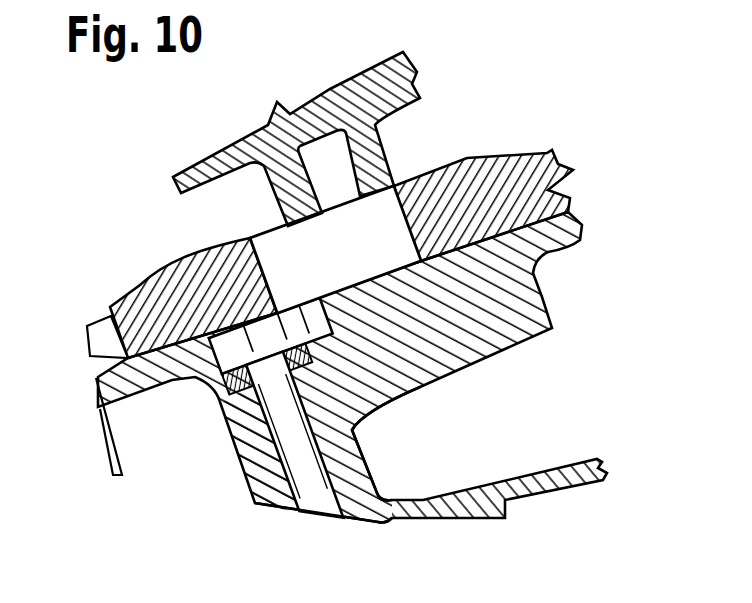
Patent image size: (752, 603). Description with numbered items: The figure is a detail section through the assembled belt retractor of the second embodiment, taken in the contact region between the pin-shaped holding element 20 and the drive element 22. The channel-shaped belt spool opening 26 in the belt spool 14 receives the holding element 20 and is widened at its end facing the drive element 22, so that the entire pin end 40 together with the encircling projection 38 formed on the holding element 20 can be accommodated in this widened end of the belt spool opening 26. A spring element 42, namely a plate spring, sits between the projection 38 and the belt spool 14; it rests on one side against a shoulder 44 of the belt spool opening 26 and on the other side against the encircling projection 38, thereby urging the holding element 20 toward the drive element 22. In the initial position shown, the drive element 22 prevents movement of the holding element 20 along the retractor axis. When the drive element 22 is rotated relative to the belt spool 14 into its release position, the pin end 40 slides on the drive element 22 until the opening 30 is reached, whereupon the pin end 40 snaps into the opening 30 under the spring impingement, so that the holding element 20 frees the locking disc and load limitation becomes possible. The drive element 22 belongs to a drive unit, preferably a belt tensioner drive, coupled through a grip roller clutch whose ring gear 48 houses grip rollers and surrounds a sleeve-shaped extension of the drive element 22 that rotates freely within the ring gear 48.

The belt spool 14 is at (468, 338).
The pin-shaped holding element 20 is at (318, 489).
The drive element 22 is at (535, 178).
The belt spool opening 26 is at (283, 472).
The opening 30 is at (372, 228).
The encircling projection 38 is at (238, 364).
The pin end 40 is at (258, 338).
The spring element 42 is at (357, 410).
The shoulder 44 is at (238, 398).
The ring gear 48 is at (370, 104).